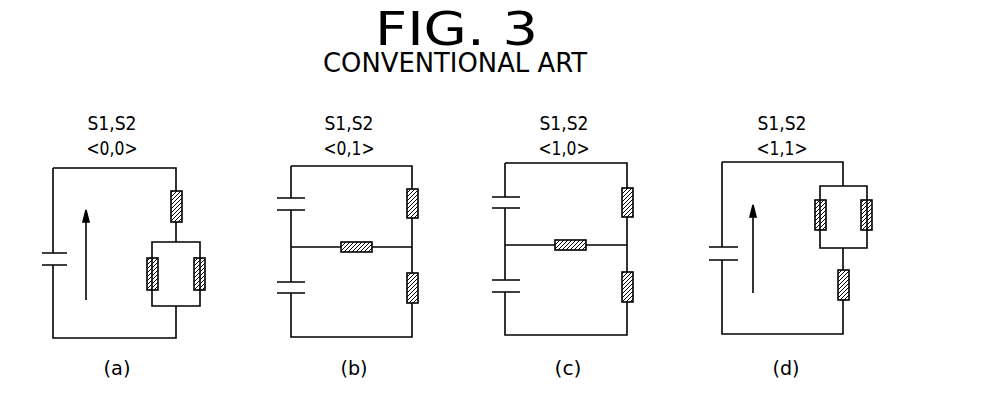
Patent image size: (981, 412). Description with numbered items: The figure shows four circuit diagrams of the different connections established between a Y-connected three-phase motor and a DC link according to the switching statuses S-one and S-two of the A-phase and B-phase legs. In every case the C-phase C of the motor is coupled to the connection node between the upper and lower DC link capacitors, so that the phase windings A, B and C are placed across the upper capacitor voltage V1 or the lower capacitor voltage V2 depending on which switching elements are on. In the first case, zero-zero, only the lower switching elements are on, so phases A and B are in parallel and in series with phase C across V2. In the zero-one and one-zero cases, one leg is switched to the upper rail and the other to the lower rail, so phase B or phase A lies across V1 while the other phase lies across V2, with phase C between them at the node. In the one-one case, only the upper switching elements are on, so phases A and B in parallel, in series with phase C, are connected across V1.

The voltage across the upper DC link capacitor V1 is at (496, 228).
The voltage across the lower DC link capacitor V2 is at (267, 274).
The A-phase A is at (494, 245).
The B-phase B is at (540, 245).
The C-phase C is at (516, 245).